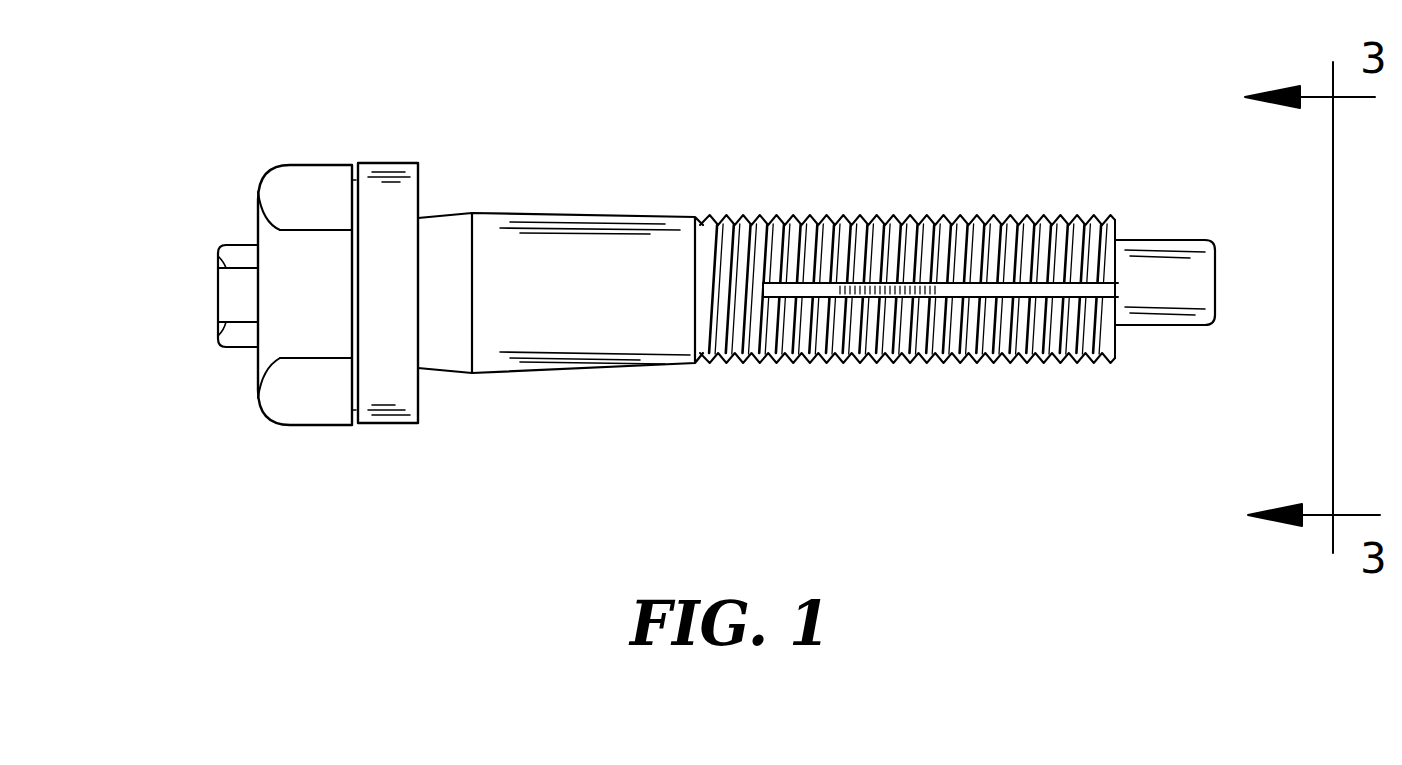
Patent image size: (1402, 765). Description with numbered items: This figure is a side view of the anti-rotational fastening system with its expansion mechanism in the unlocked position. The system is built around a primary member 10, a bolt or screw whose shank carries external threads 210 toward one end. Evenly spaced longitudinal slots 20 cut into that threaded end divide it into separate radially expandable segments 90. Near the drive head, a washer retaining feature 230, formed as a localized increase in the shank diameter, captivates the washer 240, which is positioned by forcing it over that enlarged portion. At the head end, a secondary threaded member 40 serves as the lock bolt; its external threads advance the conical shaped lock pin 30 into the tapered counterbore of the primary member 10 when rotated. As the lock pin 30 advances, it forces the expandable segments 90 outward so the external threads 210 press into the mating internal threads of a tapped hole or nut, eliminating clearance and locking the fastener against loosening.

The primary member 10 is at (425, 213).
The longitudinal slots 20 is at (997, 297).
The conical shaped lock pin 30 is at (1147, 240).
The secondary threaded member 40 is at (222, 275).
The radially expandable segments 90 is at (1120, 335).
The external threads of the primary member 210 is at (805, 217).
The washer retaining feature 230 is at (472, 372).
The washer 240 is at (392, 163).